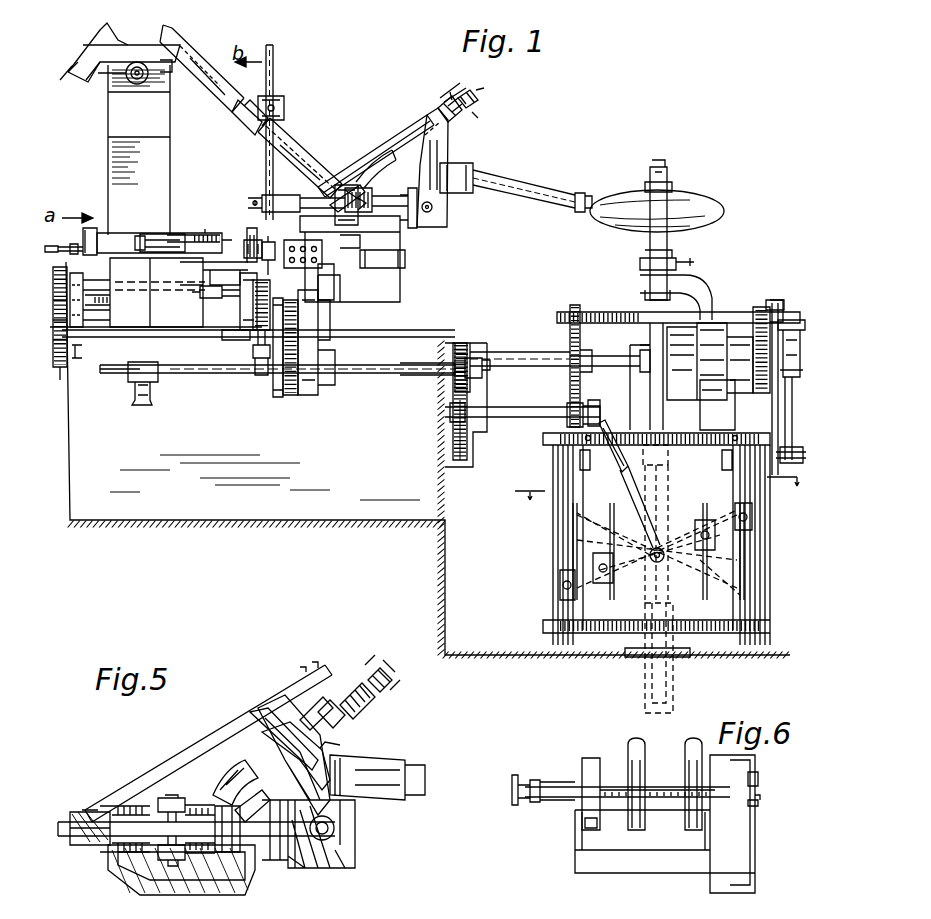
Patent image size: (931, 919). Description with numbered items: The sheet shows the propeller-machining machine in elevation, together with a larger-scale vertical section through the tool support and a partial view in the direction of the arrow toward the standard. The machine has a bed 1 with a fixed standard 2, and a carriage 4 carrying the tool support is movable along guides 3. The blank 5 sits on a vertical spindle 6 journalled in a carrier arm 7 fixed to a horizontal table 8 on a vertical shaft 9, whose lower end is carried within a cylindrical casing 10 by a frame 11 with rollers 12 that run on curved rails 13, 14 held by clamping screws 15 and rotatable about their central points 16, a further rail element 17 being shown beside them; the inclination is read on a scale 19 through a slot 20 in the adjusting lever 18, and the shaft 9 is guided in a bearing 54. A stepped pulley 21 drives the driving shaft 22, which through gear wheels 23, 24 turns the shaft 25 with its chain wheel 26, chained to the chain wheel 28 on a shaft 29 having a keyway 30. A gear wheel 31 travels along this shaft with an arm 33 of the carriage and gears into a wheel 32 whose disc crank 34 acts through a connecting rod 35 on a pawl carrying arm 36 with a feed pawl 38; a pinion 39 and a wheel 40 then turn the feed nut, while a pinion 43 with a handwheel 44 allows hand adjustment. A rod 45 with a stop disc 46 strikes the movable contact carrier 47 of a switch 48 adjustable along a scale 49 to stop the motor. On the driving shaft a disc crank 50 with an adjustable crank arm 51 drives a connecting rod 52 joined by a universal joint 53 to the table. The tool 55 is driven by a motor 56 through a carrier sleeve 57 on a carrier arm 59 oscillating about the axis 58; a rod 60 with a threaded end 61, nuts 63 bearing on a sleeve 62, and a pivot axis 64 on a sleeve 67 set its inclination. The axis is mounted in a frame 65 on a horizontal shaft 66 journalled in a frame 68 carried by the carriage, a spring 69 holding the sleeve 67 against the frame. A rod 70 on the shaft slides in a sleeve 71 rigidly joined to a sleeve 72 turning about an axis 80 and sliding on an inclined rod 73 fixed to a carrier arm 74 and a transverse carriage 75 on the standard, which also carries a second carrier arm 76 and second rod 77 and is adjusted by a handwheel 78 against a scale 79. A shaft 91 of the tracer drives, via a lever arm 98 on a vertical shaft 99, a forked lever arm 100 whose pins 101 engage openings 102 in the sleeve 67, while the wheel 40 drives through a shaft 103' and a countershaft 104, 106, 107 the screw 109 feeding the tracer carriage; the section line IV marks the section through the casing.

In FIG. 1, the bed 1 is at (72, 427).
In FIG. 1, the fixed standard 2 is at (160, 190).
In FIG. 1, the guides 3 is at (198, 338).
In FIG. 1, the carriage 4 is at (368, 365).
In FIG. 1, the blank 5 is at (690, 194).
In FIG. 1, the vertical spindle 6 is at (640, 256).
In FIG. 1, the carrier arm 7 is at (704, 292).
In FIG. 1, the horizontal table 8 is at (608, 314).
In FIG. 1, the vertical shaft 9 is at (650, 406).
In FIG. 1, the cylindrical casing 10 is at (755, 560).
In FIG. 1, the frame 11 is at (668, 512).
In FIG. 1, the rollers 12 is at (668, 530).
In FIG. 1, the rail 13 is at (632, 575).
In FIG. 1, the rail 14 is at (684, 575).
In FIG. 1, the clamping screws 15 is at (600, 585).
In FIG. 1, the central points 16 is at (657, 562).
In FIG. 1, the link 17 is at (728, 585).
In FIG. 1, the adjusting lever 18 is at (632, 485).
In FIG. 1, the scale 19 is at (700, 433).
In FIG. 1, the slot 20 is at (612, 462).
In FIG. 1, the stepped pulley 21 is at (722, 312).
In FIG. 1, the driving shaft 22 is at (510, 352).
In FIG. 1, the gear wheel 23 is at (570, 335).
In FIG. 1, the gear wheel 24 is at (566, 408).
In FIG. 1, the shaft 25 is at (495, 408).
In FIG. 1, the chain wheel 26 is at (453, 445).
In FIG. 1, the chain wheel 28 is at (462, 343).
In FIG. 1, the shaft 29 is at (362, 374).
In FIG. 1, the keyway 30 is at (402, 374).
In FIG. 1, the gear wheel 31 is at (276, 390).
In FIG. 1, the wheel 32 is at (290, 396).
In FIG. 1, the arm 33 is at (304, 392).
In FIG. 1, the disc crank 34 is at (252, 332).
In FIG. 1, the connecting rod 35 is at (215, 378).
In FIG. 1, the pawl carrying arm 36 is at (246, 242).
In FIG. 1, the feed pawl 38 is at (250, 228).
In FIG. 1, the pinion 39 is at (266, 242).
In FIG. 1, the wheel 40 is at (235, 340).
In FIG. 1, the pinion 43 is at (240, 300).
In FIG. 1, the handwheel 44 is at (225, 296).
In FIG. 1, the rod 45 is at (175, 270).
In FIG. 1, the stop disc 46 is at (90, 228).
In FIG. 1, the movable contact carrier 47 is at (140, 236).
In FIG. 1, the switch 48 is at (148, 232).
In FIG. 1, the scale 49 is at (192, 232).
In FIG. 1, the disc crank 50 is at (762, 307).
In FIG. 1, the crank arm 51 is at (780, 405).
In FIG. 1, the connecting rod 52 is at (792, 426).
In FIG. 1, the universal joint 53 is at (800, 362).
In FIG. 1, the bearing 54 is at (668, 456).
In FIG. 1, the tool 55 is at (596, 198).
In FIG. 1, the motor 56 is at (378, 165).
In FIG. 5, the motor 56 is at (278, 718).
In FIG. 1, the carrier sleeve 57 is at (520, 182).
In FIG. 5, the carrier sleeve 57 is at (420, 790).
In FIG. 1, the axis 58 is at (434, 209).
In FIG. 5, the axis 58 is at (336, 822).
In FIG. 1, the carrier arm 59 is at (450, 150).
In FIG. 5, the carrier arm 59 is at (345, 735).
In FIG. 1, the rod 60 is at (380, 178).
In FIG. 5, the rod 60 is at (230, 778).
In FIG. 1, the screw-threaded end 61 is at (466, 112).
In FIG. 5, the screw-threaded end 61 is at (332, 705).
In FIG. 1, the sleeve 62 is at (444, 118).
In FIG. 5, the sleeve 62 is at (372, 700).
In FIG. 1, the screw-threaded nuts 63 is at (478, 98).
In FIG. 5, the screw-threaded nuts 63 is at (395, 672).
In FIG. 1, the axis 64 is at (366, 192).
In FIG. 5, the axis 64 is at (238, 815).
In FIG. 1, the frame 65 is at (445, 228).
In FIG. 5, the frame 65 is at (338, 870).
In FIG. 1, the horizontal shaft 66 is at (283, 195).
In FIG. 5, the horizontal shaft 66 is at (88, 820).
In FIG. 1, the sleeve 67 is at (372, 218).
In FIG. 5, the sleeve 67 is at (120, 426).
In FIG. 1, the frame 68 is at (392, 233).
In FIG. 5, the frame 68 is at (110, 862).
In FIG. 1, the spring 69 is at (318, 180).
In FIG. 5, the spring 69 is at (135, 812).
In FIG. 1, the rod 70 is at (274, 72).
In FIG. 1, the sleeve 71 is at (280, 128).
In FIG. 1, the sleeve 72 is at (250, 120).
In FIG. 1, the rod 73 is at (70, 75).
In FIG. 6, the rod 73 is at (694, 815).
In FIG. 6, the carrier arm 74 is at (740, 806).
In FIG. 1, the transverse carriage 75 is at (110, 72).
In FIG. 6, the transverse carriage 75 is at (758, 780).
In FIG. 1, the second carrier arm 76 is at (198, 70).
In FIG. 6, the second carrier arm 76 is at (596, 762).
In FIG. 6, the second rod 77 is at (636, 815).
In FIG. 1, the handwheel 78 is at (128, 92).
In FIG. 6, the handwheel 78 is at (512, 792).
In FIG. 6, the scale 79 is at (660, 786).
In FIG. 1, the axis 80 is at (286, 100).
In FIG. 1, the shaft 91 is at (205, 268).
In FIG. 1, the lever arm 98 is at (360, 258).
In FIG. 1, the vertical shaft 99 is at (345, 292).
In FIG. 1, the lever arm 100 is at (338, 222).
In FIG. 5, the lever arm 100 is at (190, 870).
In FIG. 5, the pins 101 is at (172, 798).
In FIG. 5, the openings 102 is at (185, 845).
In FIG. 1, the shaft 103' is at (160, 294).
In FIG. 1, the countershaft 104 is at (60, 247).
In FIG. 1, the countershaft 106 is at (90, 320).
In FIG. 1, the countershaft 107 is at (62, 370).
In FIG. 1, the screw 109 is at (103, 303).
In FIG. 1, the section line IV is at (657, 478).